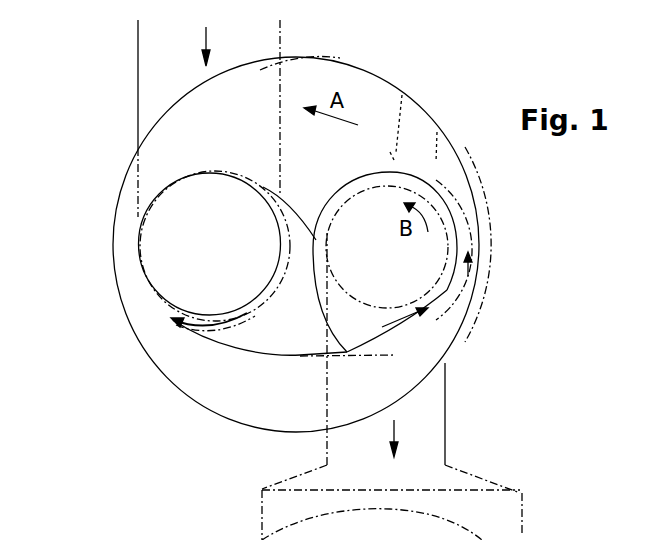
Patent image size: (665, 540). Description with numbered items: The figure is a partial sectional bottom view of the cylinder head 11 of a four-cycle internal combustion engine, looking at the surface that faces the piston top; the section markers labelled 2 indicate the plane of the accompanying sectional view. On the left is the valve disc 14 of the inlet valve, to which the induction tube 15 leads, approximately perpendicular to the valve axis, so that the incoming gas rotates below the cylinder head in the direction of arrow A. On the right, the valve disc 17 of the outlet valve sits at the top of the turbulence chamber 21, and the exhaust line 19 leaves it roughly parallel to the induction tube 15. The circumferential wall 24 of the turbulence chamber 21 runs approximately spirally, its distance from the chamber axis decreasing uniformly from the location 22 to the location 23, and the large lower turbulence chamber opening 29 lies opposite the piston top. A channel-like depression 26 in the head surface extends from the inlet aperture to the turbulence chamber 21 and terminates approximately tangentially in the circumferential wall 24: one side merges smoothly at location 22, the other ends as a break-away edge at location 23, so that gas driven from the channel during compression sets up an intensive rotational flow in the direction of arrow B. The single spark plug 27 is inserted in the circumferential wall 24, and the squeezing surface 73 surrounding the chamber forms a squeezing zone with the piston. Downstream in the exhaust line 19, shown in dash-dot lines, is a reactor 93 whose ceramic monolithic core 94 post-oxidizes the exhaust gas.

The cylinder head 11 is at (373, 97).
The induction tube 15 is at (139, 82).
The squeezing surface 73 is at (312, 72).
The valve disc 14 is at (216, 173).
The location 23 is at (318, 233).
The valve disc 17 is at (348, 255).
The turbulence chamber 21 is at (443, 209).
The location 22 is at (347, 352).
The channel-like depression 26 is at (303, 328).
The turbulence chamber opening 29 is at (352, 183).
The spark plug 27 is at (392, 155).
The circumferential wall 24 is at (505, 224).
The exhaust line 19 is at (435, 433).
The ceramic monolithic core 94 is at (262, 470).
The reactor 93 is at (536, 512).
The section line 2 is at (107, 233).